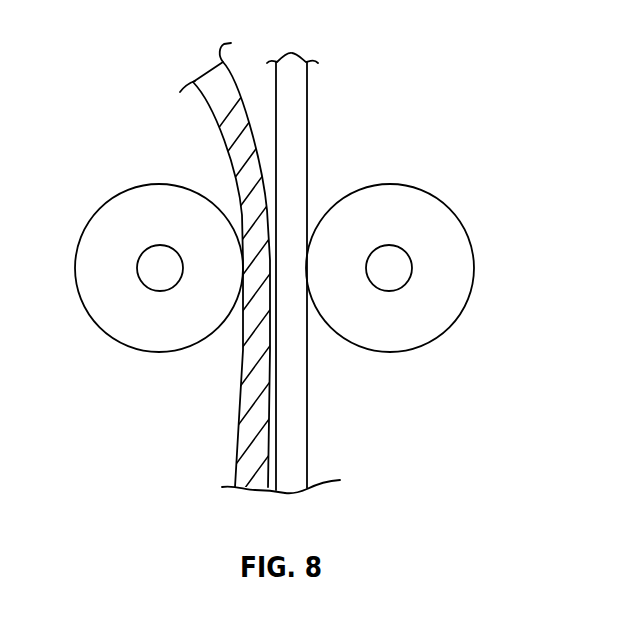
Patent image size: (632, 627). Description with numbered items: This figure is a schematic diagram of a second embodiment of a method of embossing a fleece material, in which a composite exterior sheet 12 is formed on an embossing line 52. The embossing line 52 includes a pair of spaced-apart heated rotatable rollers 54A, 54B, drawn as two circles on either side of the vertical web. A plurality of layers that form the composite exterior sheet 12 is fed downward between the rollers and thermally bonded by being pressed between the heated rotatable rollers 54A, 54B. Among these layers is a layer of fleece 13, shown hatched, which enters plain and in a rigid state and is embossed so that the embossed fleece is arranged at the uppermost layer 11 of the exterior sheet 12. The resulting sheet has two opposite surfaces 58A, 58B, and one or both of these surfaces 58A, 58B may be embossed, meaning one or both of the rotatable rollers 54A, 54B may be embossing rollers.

The embossing line 52 is at (467, 95).
The rotatable roller 54A is at (88, 228).
The rotatable roller 54B is at (437, 203).
The composite exterior sheet 12 is at (187, 463).
The layer of fleece 13 is at (228, 132).
The uppermost layer 11 is at (242, 375).
The surface 58A is at (237, 452).
The surface 58B is at (307, 437).